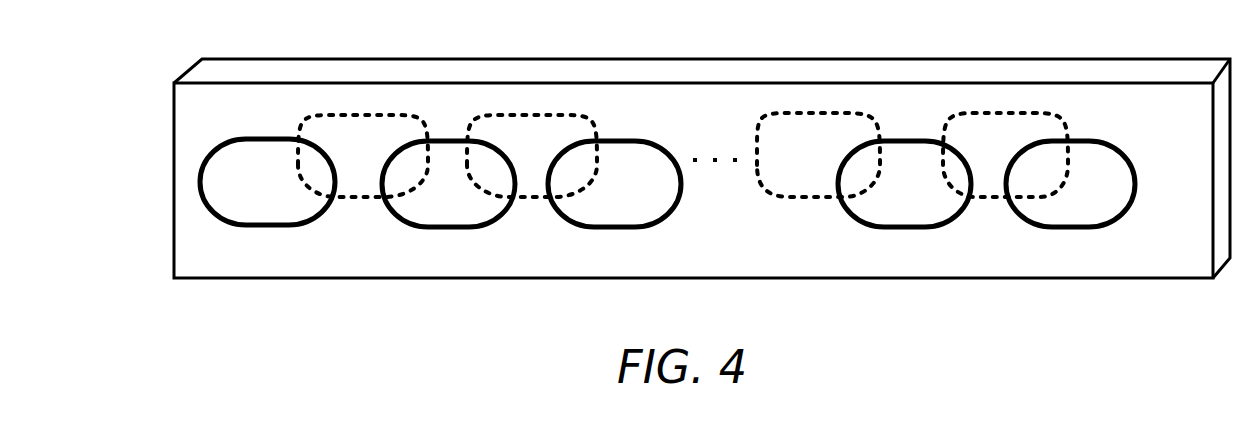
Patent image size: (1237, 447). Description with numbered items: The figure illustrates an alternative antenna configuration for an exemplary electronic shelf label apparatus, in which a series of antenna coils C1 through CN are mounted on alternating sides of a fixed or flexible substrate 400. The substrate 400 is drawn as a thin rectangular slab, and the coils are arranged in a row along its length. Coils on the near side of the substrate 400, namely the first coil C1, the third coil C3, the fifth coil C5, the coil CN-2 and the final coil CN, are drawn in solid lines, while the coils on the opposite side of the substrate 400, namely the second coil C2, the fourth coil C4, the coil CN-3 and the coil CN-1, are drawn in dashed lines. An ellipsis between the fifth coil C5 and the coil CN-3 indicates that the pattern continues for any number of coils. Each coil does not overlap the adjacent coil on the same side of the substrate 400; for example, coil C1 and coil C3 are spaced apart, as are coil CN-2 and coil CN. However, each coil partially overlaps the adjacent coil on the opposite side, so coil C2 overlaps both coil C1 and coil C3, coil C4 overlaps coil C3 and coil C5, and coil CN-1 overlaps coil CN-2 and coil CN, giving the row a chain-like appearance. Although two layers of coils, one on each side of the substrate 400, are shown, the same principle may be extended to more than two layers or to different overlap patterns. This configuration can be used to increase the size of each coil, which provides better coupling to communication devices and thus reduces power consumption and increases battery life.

The substrate 400 is at (213, 72).
The antenna coil C1 is at (267, 182).
The antenna coil C2 is at (363, 156).
The antenna coil C3 is at (448, 184).
The antenna coil C4 is at (532, 156).
The antenna coil C5 is at (614, 184).
The antenna coil CN-3 is at (818, 155).
The antenna coil CN-2 is at (904, 184).
The antenna coil CN-1 is at (1005, 155).
The antenna coil CN is at (1070, 184).